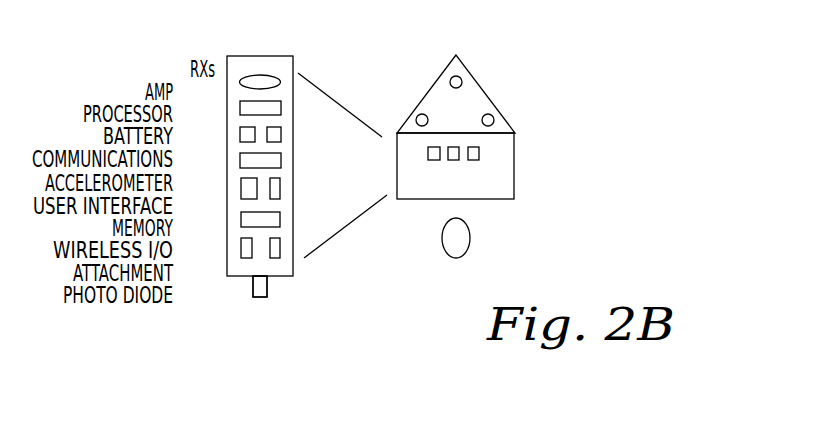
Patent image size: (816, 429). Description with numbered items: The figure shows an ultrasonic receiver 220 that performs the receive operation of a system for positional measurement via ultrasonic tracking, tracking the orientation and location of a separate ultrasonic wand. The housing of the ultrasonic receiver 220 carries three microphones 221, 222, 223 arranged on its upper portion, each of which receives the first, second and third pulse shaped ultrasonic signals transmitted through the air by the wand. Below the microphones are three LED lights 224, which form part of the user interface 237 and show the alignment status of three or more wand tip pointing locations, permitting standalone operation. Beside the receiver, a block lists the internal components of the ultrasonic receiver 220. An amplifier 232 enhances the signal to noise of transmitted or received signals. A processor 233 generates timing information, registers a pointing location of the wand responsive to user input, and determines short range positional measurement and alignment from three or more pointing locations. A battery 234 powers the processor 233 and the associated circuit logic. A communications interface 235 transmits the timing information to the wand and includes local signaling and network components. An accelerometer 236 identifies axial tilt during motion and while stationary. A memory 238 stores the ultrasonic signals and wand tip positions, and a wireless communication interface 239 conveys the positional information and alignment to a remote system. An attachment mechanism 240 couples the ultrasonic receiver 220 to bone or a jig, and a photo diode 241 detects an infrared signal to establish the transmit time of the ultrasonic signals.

The ultrasonic receiver 220 is at (495, 148).
The microphone 221 is at (463, 80).
The microphone 222 is at (493, 115).
The microphone 223 is at (420, 116).
The LED lights 224 is at (434, 160).
The amplifier 232 is at (234, 90).
The processor 233 is at (234, 114).
The battery 234 is at (234, 136).
The communications interface 235 is at (234, 159).
The accelerometer 236 is at (222, 184).
The user interface 237 is at (233, 198).
The memory 238 is at (233, 226).
The wireless communication interface 239 is at (219, 250).
The attachment mechanism 240 is at (233, 262).
The photo diode 241 is at (227, 292).